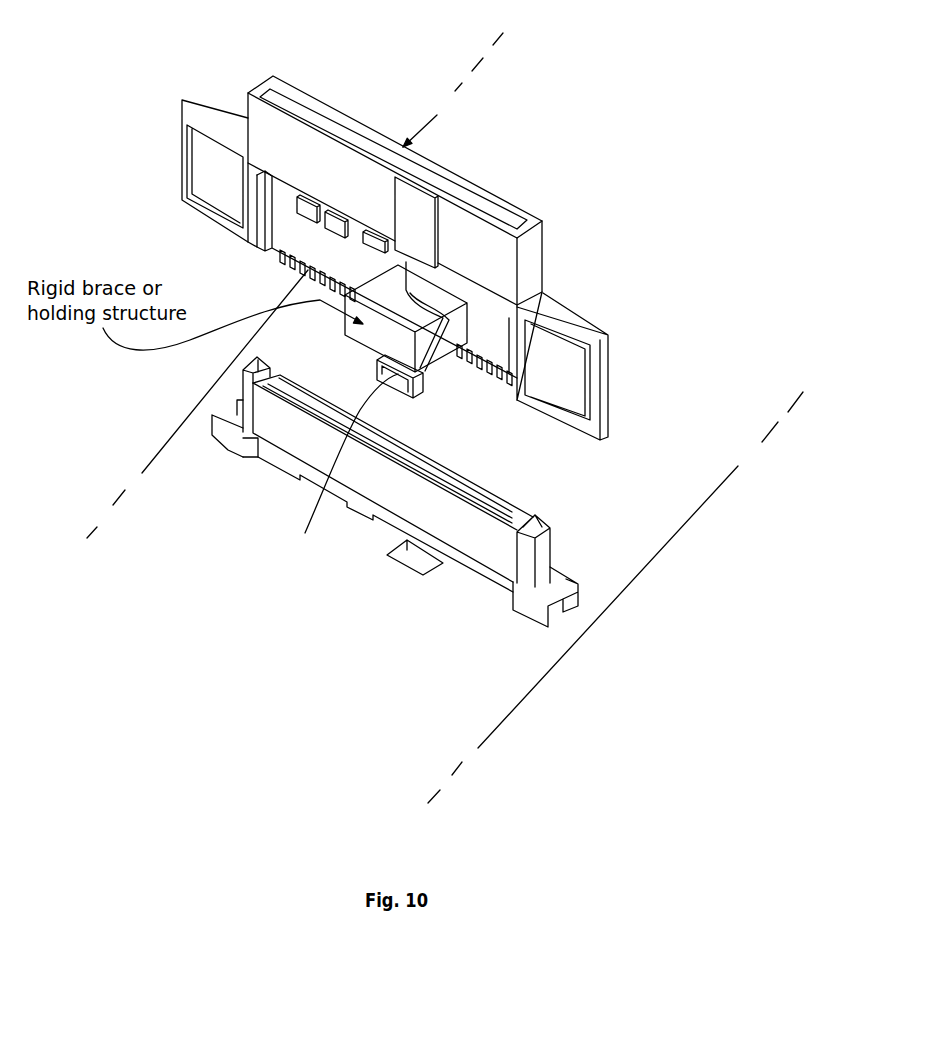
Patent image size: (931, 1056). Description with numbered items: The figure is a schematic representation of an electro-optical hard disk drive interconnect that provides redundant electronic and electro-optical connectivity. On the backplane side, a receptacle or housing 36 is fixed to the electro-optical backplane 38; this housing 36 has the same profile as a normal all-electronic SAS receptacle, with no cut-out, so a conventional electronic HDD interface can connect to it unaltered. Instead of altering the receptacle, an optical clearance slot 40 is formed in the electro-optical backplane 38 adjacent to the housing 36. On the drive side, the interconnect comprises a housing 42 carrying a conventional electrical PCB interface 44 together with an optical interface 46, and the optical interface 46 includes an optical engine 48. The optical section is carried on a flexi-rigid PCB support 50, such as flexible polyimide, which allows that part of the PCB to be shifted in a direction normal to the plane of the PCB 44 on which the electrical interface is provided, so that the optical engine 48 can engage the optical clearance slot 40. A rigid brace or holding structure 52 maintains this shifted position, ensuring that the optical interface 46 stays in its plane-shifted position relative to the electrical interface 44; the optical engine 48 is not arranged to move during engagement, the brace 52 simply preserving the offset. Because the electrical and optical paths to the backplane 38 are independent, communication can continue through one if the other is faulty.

The housing 36 is at (493, 560).
The electro-optical backplane 38 is at (523, 680).
The optical clearance slot 40 is at (410, 560).
The housing 42 is at (268, 113).
The electrical PCB interface 44 is at (272, 252).
The optical interface 46 is at (375, 366).
The optical engine 48 is at (338, 471).
The flexi-rigid PCB support 50 is at (423, 383).
The rigid brace or holding structure 52 is at (437, 320).